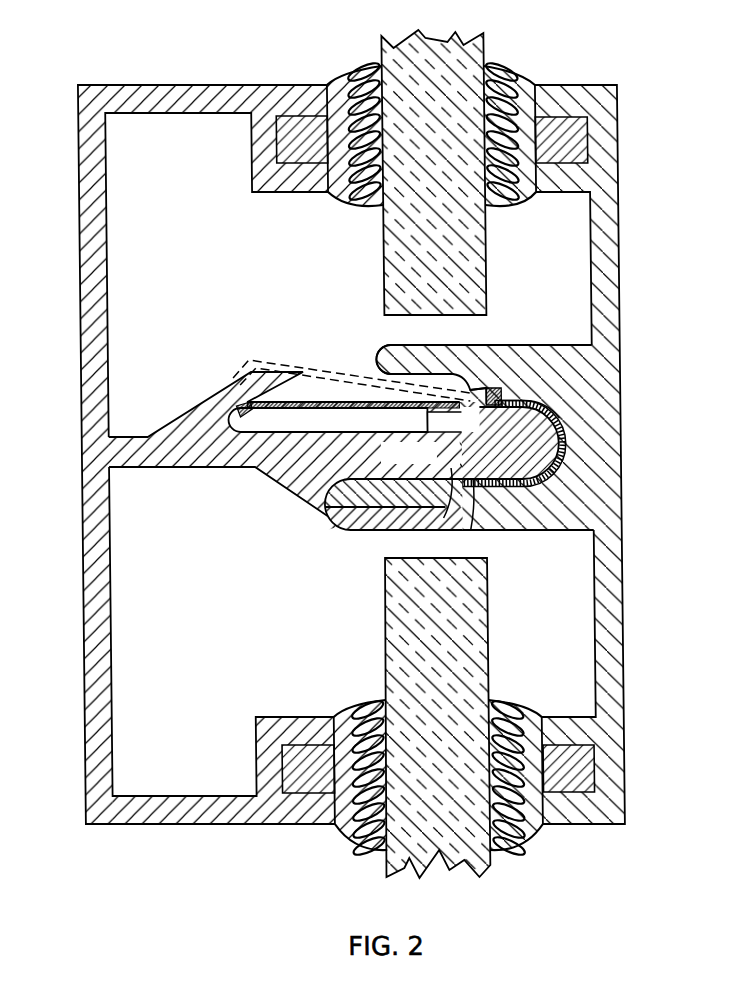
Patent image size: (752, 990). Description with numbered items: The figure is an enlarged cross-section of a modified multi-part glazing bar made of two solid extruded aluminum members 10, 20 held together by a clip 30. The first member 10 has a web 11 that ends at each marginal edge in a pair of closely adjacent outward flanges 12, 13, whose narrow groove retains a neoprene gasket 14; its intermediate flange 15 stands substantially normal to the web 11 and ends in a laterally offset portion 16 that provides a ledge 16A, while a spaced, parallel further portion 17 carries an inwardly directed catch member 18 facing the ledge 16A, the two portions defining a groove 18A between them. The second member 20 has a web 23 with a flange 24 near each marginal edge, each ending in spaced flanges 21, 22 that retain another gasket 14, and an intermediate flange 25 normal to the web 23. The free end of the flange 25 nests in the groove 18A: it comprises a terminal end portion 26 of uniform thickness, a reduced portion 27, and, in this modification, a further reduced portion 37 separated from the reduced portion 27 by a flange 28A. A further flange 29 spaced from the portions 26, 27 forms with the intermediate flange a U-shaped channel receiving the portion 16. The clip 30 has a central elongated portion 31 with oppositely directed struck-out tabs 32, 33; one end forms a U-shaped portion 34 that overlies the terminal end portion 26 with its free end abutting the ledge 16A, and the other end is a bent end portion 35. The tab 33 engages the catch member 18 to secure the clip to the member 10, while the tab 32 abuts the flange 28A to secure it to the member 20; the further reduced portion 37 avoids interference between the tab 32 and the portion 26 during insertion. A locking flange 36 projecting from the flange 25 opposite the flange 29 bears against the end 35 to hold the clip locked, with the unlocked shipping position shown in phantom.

The extruded member 10 is at (603, 800).
The web 11 is at (603, 588).
The flange 12 is at (559, 805).
The flange 13 is at (552, 727).
The gasket 14 is at (341, 810).
The intermediate flange 15 is at (529, 534).
The offset portion 16 is at (312, 516).
The ledge 16A is at (465, 530).
The further portion 17 is at (438, 350).
The catch member 18 is at (474, 398).
The groove 18A is at (562, 426).
The extruded member 20 is at (140, 858).
The further flange 21 is at (300, 728).
The further flange 22 is at (283, 825).
The web 23 is at (86, 602).
The flange 24 is at (150, 103).
The intermediate flange 25 is at (191, 456).
The terminal end portion 26 is at (530, 443).
The reduced portion 27 is at (337, 452).
The flange 28A is at (409, 452).
The further flange 29 is at (370, 522).
The clip 30 is at (315, 395).
The central elongated portion 31 is at (353, 402).
The struck-out tab 32 is at (398, 415).
The struck-out tab 33 is at (490, 398).
The U-shaped portion 34 is at (563, 463).
The bent end portion 35 is at (242, 412).
The locking flange 36 is at (222, 383).
The further reduced portion 37 is at (438, 518).